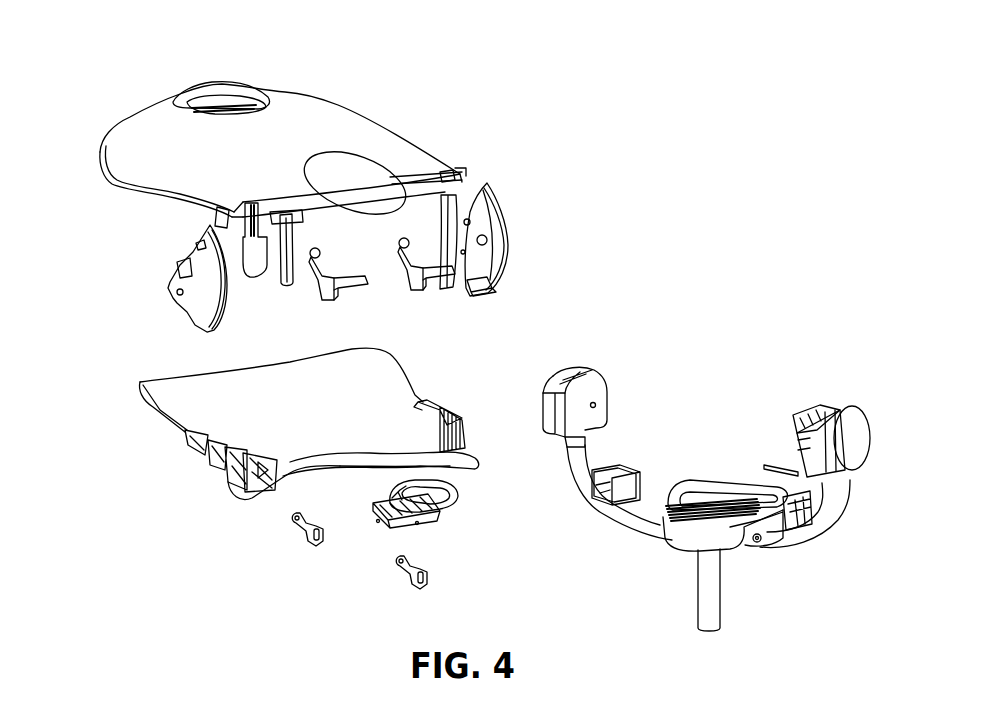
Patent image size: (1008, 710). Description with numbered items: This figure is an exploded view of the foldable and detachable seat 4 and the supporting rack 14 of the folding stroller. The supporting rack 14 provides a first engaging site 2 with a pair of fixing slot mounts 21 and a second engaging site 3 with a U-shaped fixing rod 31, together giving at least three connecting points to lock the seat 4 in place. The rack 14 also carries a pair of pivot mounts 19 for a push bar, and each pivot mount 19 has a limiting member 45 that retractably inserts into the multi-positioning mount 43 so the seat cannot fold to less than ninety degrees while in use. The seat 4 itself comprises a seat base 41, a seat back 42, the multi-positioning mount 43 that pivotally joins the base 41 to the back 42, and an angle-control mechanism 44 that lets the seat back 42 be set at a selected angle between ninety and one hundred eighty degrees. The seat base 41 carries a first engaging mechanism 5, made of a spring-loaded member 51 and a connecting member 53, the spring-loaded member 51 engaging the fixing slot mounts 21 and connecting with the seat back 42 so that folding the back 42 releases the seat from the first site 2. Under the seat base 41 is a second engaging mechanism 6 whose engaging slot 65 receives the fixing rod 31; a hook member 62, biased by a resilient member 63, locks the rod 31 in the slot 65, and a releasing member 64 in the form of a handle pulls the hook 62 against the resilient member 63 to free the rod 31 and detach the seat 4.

The first engaging site 2 is at (611, 463).
The second engaging site 3 is at (726, 475).
The foldable and detachable seat 4 is at (122, 350).
The first engaging mechanism 5 is at (456, 322).
The second engaging mechanism 6 is at (325, 575).
The supporting rack 14 is at (845, 502).
The pivot mount 19 is at (576, 366).
The fixing slot mount 21 is at (608, 503).
The U-shaped fixing rod 31 is at (675, 482).
The seat base 41 is at (358, 429).
The seat back 42 is at (362, 136).
The multi-positioning mount 43 is at (500, 207).
The angle-control mechanism 44 is at (245, 100).
The limiting member 45 is at (770, 463).
The spring-loaded member 51 is at (346, 293).
The connecting member 53 is at (290, 287).
The hook member 62 is at (303, 544).
The resilient member 63 is at (393, 496).
The releasing member 64 is at (438, 518).
The engaging slot 65 is at (382, 518).